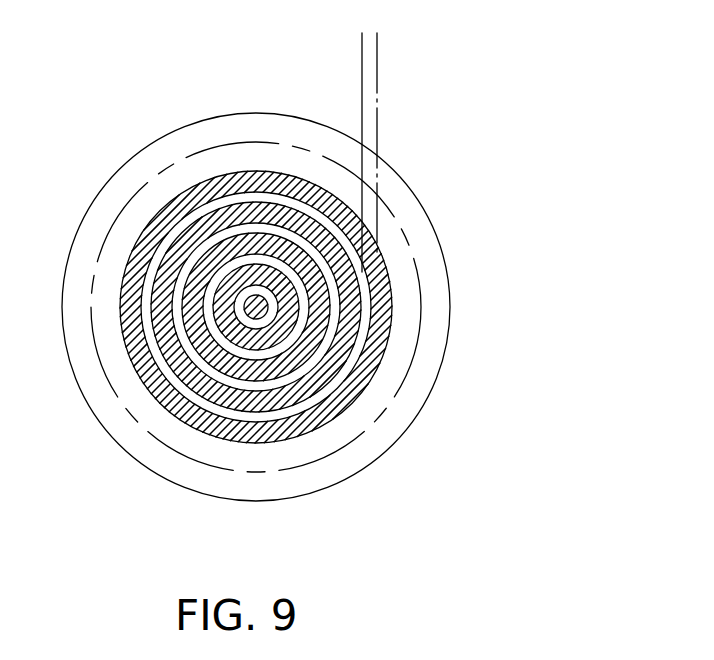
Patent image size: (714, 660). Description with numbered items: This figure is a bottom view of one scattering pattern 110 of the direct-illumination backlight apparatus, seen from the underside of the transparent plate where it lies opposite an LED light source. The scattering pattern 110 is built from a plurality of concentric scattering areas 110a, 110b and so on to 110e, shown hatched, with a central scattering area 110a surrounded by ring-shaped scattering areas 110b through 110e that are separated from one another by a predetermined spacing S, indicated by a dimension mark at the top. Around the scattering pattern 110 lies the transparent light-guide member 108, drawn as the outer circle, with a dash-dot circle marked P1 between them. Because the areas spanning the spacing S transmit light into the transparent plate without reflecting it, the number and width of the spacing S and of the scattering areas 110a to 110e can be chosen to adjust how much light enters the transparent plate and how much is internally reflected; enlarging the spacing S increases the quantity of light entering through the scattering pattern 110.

The transparent light-guide member 108 is at (448, 258).
The reference position P1 is at (100, 257).
The scattering pattern 110 is at (316, 292).
The scattering area 110a is at (258, 320).
The scattering area 110b is at (291, 322).
The scattering area 110e is at (316, 359).
The spacing S is at (325, 43).